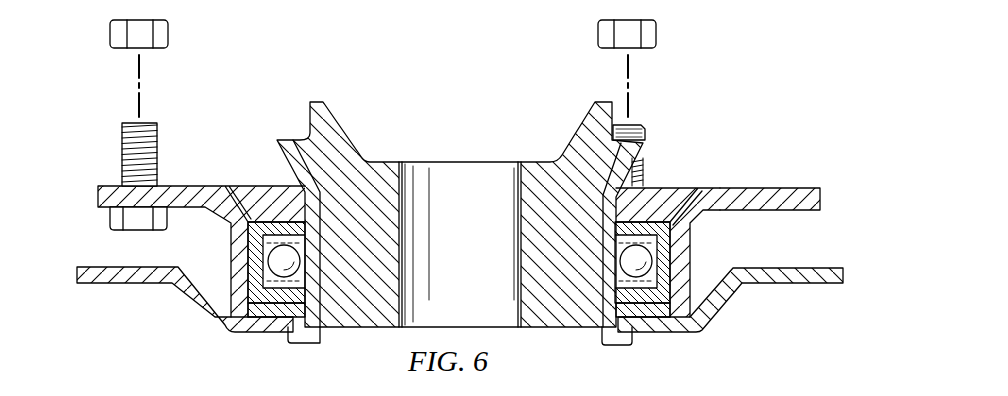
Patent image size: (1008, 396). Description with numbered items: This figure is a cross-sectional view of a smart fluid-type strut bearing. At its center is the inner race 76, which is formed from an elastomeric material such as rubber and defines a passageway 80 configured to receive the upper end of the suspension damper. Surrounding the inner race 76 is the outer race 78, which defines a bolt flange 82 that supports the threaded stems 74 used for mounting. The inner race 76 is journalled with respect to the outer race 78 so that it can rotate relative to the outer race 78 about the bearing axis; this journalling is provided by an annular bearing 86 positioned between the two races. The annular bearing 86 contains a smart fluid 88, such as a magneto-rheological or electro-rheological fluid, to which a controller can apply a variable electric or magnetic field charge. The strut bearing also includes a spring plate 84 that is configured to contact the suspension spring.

The threaded stems 74 is at (122, 150).
The inner race 76 is at (572, 143).
The outer race 78 is at (678, 193).
The passageway 80 is at (517, 176).
The bolt flange 82 is at (768, 195).
The spring plate 84 is at (782, 277).
The annular bearing 86 is at (272, 213).
The smart fluid 88 is at (264, 305).